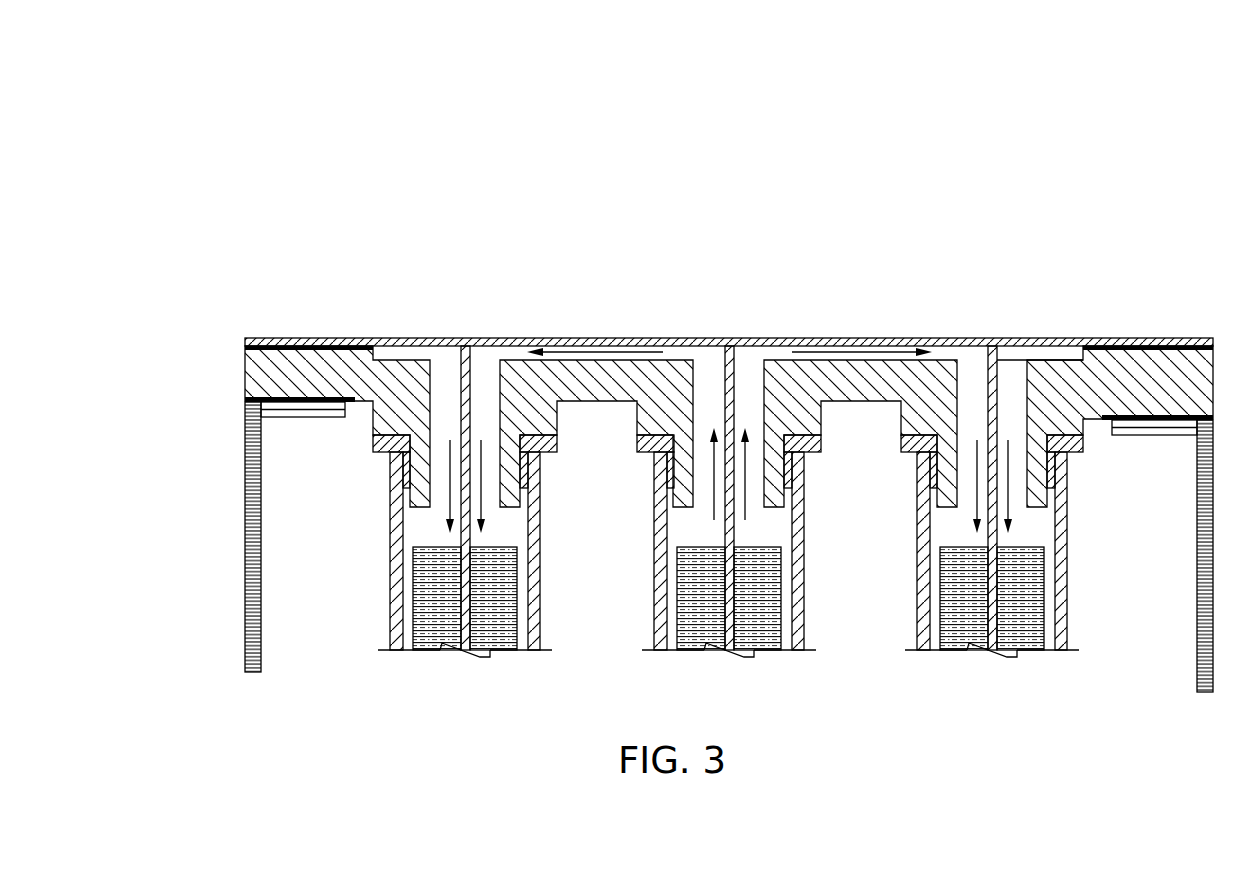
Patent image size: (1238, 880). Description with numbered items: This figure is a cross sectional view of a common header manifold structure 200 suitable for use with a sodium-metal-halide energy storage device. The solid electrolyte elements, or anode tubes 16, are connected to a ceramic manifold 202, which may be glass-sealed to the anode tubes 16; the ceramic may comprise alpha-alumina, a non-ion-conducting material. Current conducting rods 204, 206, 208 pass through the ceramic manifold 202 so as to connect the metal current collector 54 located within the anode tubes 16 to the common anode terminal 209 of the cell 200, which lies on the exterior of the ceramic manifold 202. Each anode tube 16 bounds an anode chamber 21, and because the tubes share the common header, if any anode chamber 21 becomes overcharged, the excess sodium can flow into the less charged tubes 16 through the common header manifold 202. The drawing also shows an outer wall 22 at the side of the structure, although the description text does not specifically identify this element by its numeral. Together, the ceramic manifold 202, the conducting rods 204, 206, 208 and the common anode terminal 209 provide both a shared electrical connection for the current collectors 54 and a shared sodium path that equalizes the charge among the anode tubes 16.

The common header manifold structure 200 is at (197, 100).
The ceramic manifold 202 is at (232, 368).
The current conducting rod 204 is at (497, 338).
The current conducting rod 206 is at (743, 340).
The current conducting rod 208 is at (1010, 338).
The common anode terminal 209 is at (660, 333).
The solid electrolyte element 16 is at (653, 603).
The anode chamber 21 is at (1043, 522).
The end wall 22 is at (245, 540).
The metal current collector 54 is at (458, 537).